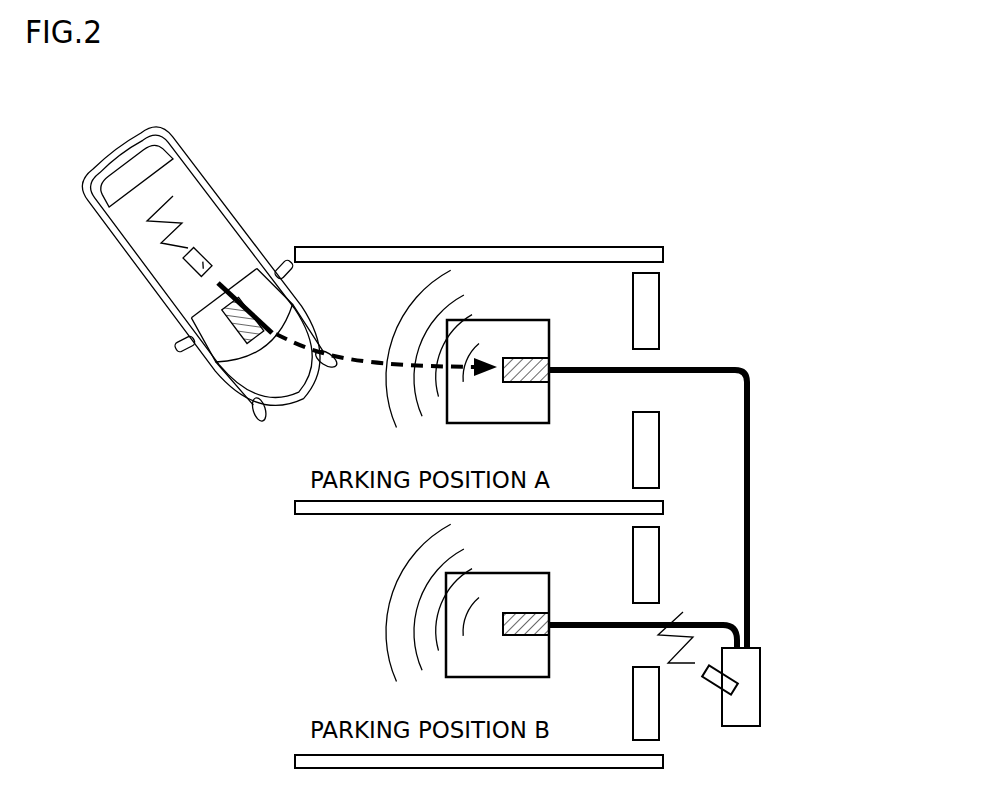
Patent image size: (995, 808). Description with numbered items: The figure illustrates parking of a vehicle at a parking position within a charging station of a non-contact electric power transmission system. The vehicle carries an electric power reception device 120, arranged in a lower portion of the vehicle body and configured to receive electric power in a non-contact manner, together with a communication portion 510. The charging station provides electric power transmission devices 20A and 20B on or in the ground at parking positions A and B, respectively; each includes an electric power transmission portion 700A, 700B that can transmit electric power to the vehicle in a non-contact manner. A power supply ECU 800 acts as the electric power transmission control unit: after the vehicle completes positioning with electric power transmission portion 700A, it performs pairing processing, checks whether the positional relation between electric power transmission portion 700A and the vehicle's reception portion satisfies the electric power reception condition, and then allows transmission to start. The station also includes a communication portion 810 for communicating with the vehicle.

The communication portion 510 is at (193, 272).
The electric power reception device 120 is at (226, 310).
The electric power transmission device 20A is at (483, 319).
The electric power transmission device 20B is at (488, 572).
The electric power transmission portion 700A is at (530, 357).
The electric power transmission portion 700B is at (537, 612).
The power supply ECU 800 is at (753, 647).
The communication portion 810 is at (713, 688).